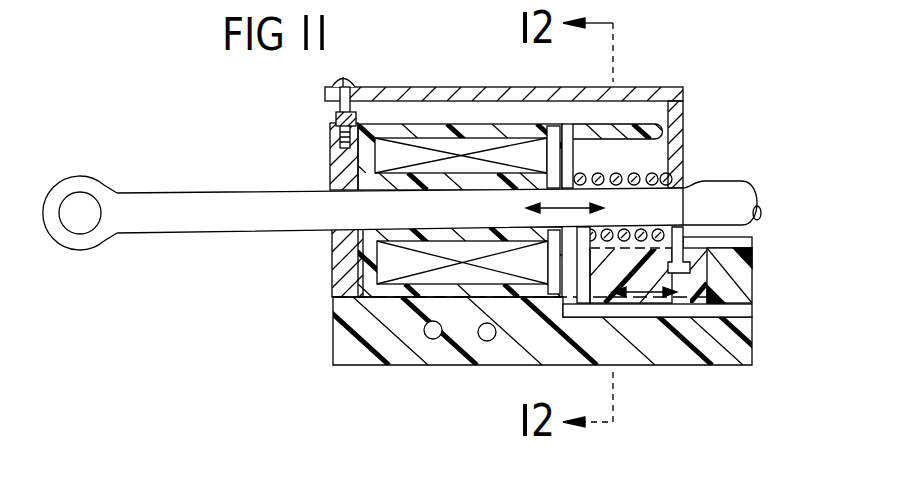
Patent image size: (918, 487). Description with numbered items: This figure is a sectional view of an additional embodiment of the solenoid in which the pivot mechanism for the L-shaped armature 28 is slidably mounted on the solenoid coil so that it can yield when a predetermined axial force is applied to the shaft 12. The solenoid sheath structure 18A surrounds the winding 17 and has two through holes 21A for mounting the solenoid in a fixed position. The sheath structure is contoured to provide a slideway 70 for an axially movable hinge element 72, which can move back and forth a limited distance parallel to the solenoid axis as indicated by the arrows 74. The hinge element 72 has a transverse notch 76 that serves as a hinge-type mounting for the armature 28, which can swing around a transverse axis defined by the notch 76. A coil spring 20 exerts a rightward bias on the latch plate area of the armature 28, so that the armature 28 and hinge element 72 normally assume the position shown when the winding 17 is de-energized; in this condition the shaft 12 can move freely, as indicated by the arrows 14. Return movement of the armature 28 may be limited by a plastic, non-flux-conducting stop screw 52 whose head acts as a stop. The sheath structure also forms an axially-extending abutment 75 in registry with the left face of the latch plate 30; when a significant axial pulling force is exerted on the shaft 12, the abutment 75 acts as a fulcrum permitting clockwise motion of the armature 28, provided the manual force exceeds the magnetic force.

The shaft 12 is at (755, 185).
The arrows 14 is at (690, 186).
The winding 17 is at (478, 142).
The solenoid sheath structure 18A is at (333, 318).
The coil spring 20 is at (656, 175).
The through holes 21A is at (433, 340).
The armature 28 is at (685, 90).
The latch plate 30 is at (688, 236).
The stop screw 52 is at (338, 100).
The slideway 70 is at (575, 320).
The hinge element 72 is at (690, 320).
The arrows 74 is at (642, 318).
The abutment 75 is at (648, 133).
The transverse notch 76 is at (693, 270).